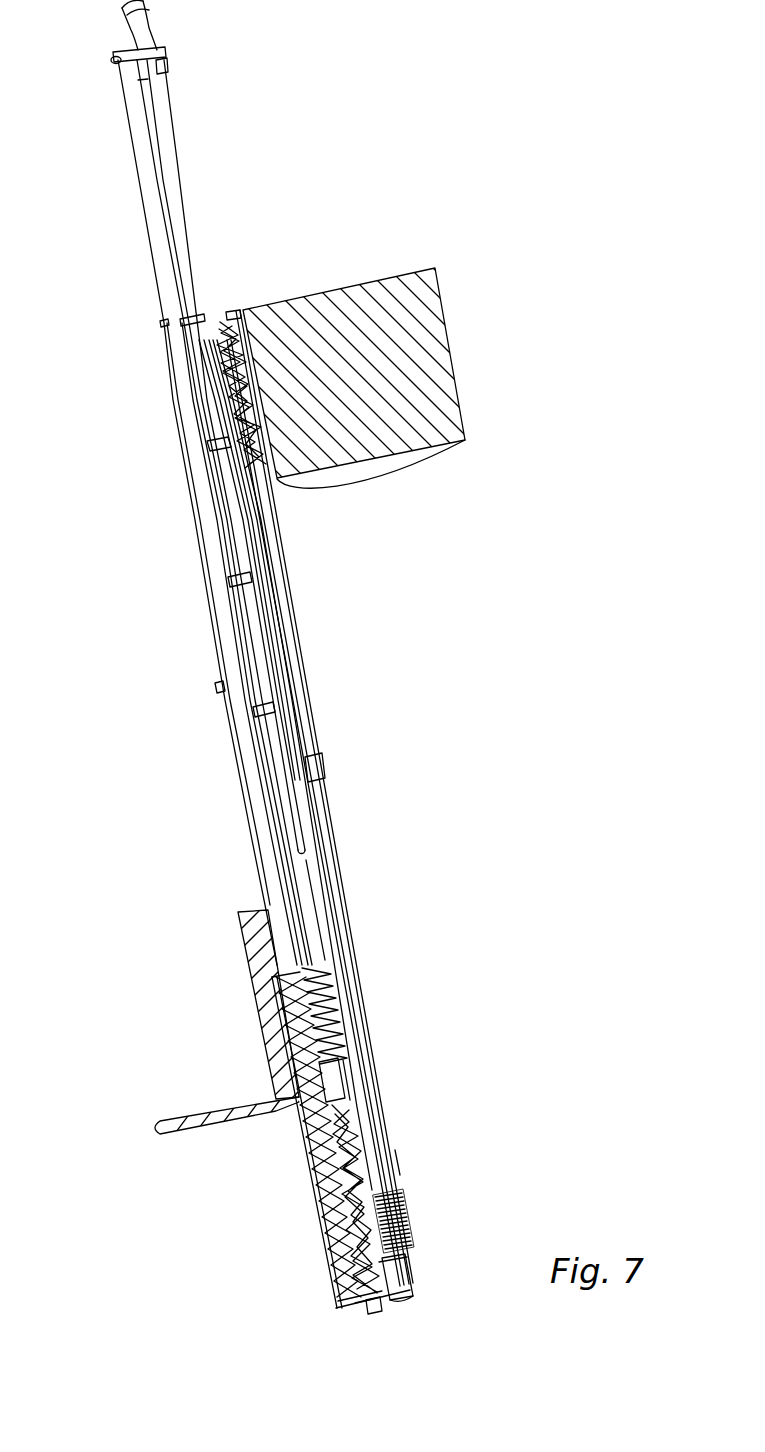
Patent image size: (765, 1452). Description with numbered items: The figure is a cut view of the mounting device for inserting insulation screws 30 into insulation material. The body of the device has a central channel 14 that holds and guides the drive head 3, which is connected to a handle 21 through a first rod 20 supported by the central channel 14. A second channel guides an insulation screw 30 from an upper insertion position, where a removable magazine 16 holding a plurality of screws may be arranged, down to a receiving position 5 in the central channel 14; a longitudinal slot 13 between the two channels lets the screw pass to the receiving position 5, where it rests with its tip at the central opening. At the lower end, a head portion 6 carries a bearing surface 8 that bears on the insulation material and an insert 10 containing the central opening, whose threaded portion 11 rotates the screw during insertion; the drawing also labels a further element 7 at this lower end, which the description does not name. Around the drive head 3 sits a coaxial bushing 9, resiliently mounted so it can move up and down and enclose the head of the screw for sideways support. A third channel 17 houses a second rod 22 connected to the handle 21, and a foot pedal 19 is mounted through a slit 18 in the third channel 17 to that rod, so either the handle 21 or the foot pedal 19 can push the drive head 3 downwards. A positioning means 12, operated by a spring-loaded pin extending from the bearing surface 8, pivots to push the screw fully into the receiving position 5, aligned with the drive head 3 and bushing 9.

The drive head 3 is at (348, 1088).
The receiving position 5 is at (413, 1158).
The head portion 6 is at (435, 1267).
The outlet opening 7 is at (380, 1308).
The bearing surface 8 is at (340, 1316).
The coaxial bushing 9 is at (335, 1087).
The insert 10 is at (405, 1300).
The threaded portion 11 is at (365, 1312).
The positioning means 12 is at (338, 928).
The longitudinal slot 13 is at (313, 875).
The central channel 14 is at (299, 650).
The magazine 16 is at (445, 352).
The third channel 17 is at (212, 645).
The slit 18 is at (292, 1153).
The foot pedal 19 is at (195, 1114).
The first rod 20 is at (179, 206).
The handle 21 is at (150, 27).
The second rod 22 is at (152, 214).
The insulation screw 30 is at (232, 328).